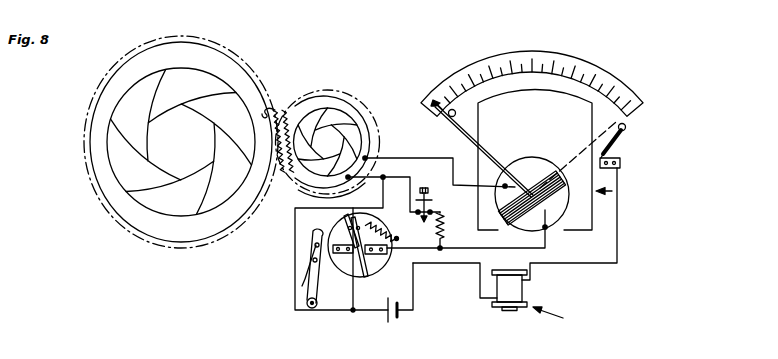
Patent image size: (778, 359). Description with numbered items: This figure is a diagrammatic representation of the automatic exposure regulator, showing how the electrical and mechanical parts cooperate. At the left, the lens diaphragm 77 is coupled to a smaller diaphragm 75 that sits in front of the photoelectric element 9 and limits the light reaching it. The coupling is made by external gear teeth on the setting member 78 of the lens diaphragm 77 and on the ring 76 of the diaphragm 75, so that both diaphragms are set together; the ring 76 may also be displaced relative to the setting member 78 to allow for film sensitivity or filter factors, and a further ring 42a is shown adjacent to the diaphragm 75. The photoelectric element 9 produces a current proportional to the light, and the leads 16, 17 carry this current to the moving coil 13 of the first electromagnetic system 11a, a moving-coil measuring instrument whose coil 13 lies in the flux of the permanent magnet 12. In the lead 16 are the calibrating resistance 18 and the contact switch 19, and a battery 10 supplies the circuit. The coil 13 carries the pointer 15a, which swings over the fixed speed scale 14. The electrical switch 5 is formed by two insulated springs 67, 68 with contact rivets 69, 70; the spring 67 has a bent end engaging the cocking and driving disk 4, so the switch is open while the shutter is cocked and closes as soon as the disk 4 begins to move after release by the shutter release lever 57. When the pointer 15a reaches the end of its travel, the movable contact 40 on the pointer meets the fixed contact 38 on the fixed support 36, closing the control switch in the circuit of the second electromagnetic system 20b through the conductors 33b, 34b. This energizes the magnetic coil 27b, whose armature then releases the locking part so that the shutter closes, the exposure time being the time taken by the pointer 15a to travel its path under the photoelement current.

The lens diaphragm 77 is at (186, 78).
The setting member 78 is at (268, 106).
The ring 76 is at (290, 108).
The diaphragm 75 is at (322, 111).
The photoelectric element 9 is at (330, 140).
The iris setting ring 42a is at (328, 148).
The contact rivet 70 is at (353, 210).
The lead 17 is at (391, 157).
The lead 16 is at (380, 179).
The rotary switch 5 is at (376, 223).
The spring 68 is at (386, 258).
The contact rivet 69 is at (345, 222).
The spring 67 is at (363, 268).
The cocking and driving disk 4 is at (346, 265).
The shutter release lever 57 is at (313, 287).
The battery 10 is at (386, 317).
The contact switch 19 is at (436, 197).
The calibrating resistance 18 is at (445, 221).
The speed scale 14 is at (531, 57).
The movable contact 40 is at (458, 93).
The permanent magnet 12 is at (548, 103).
The pointer 15a is at (464, 128).
The contact 38 is at (626, 127).
The fixed support 36 is at (622, 141).
The first electromagnetic system 11a is at (612, 191).
The moving coil 13 is at (553, 195).
The conductor 34b is at (437, 265).
The magnetic coil 27b is at (513, 289).
The conductor 33b is at (595, 265).
The second electromagnetic system 20b is at (545, 317).